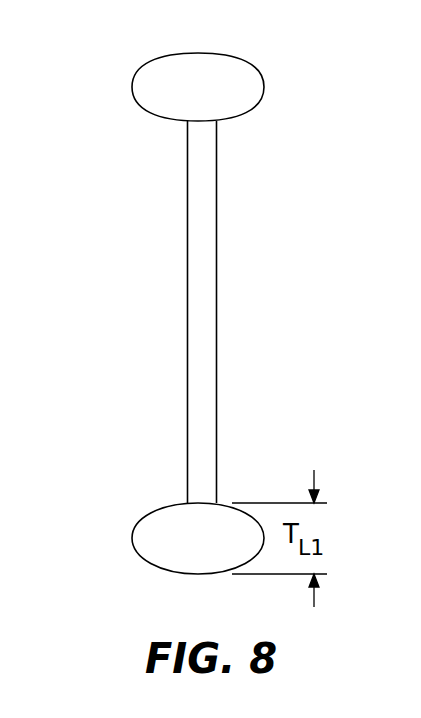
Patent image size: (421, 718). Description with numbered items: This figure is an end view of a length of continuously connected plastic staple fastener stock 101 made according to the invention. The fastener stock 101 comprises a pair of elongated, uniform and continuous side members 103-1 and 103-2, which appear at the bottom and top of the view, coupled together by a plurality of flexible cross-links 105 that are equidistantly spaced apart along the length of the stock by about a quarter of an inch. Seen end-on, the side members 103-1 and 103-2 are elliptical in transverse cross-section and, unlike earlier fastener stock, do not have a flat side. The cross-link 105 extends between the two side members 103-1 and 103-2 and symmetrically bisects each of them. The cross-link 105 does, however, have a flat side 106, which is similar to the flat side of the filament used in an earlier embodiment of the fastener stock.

The fastener stock 101 is at (122, 175).
The side member 103-2 is at (185, 54).
The side member 103-1 is at (162, 517).
The cross-link 105 is at (192, 290).
The flat side 106 is at (217, 332).